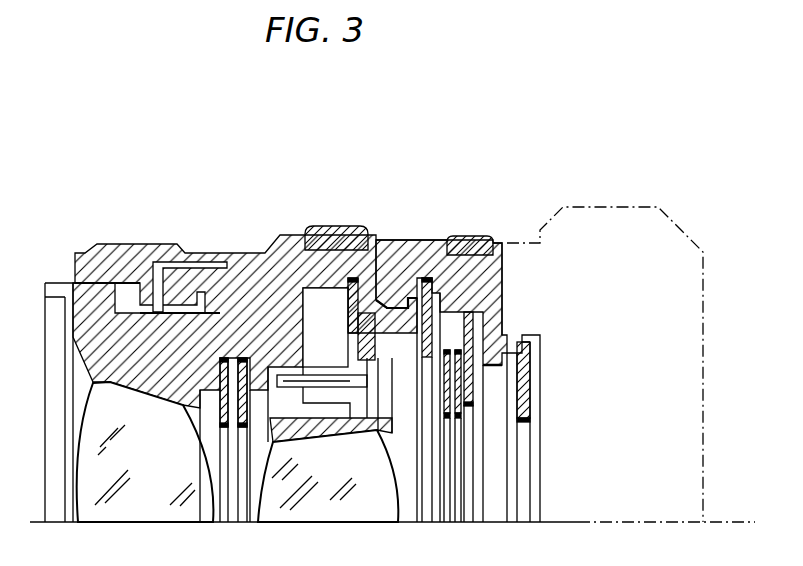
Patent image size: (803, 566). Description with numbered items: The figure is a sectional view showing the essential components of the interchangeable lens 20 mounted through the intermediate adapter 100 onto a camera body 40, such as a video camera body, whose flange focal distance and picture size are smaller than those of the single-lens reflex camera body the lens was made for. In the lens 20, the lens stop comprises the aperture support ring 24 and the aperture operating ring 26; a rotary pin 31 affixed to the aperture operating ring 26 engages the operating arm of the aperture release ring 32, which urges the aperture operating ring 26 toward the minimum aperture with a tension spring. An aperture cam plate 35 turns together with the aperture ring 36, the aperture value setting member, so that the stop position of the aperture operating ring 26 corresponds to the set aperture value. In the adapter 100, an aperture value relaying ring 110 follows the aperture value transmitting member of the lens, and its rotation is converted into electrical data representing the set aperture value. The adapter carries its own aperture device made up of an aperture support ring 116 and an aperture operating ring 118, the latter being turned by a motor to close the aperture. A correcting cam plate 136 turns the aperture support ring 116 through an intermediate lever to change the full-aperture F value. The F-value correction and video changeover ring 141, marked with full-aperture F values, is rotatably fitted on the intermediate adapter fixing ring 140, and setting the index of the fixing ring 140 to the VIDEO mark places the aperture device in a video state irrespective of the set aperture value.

The interchangeable lens 20 is at (360, 148).
The aperture support ring 24 is at (223, 356).
The aperture operating ring 26 is at (243, 357).
The rotary pin 31 is at (325, 385).
The aperture release ring 32 is at (383, 297).
The aperture cam plate 35 is at (346, 290).
The aperture ring 36 is at (330, 228).
The camera body 40 is at (681, 233).
The intermediate adapter 100 is at (502, 148).
The aperture value relaying ring 110 is at (447, 305).
The aperture support ring 116 is at (483, 383).
The aperture operating ring 118 is at (447, 413).
The correcting cam plate 136 is at (470, 318).
The fixing ring 140 is at (420, 243).
The F-value correction and video changeover ring 141 is at (475, 240).